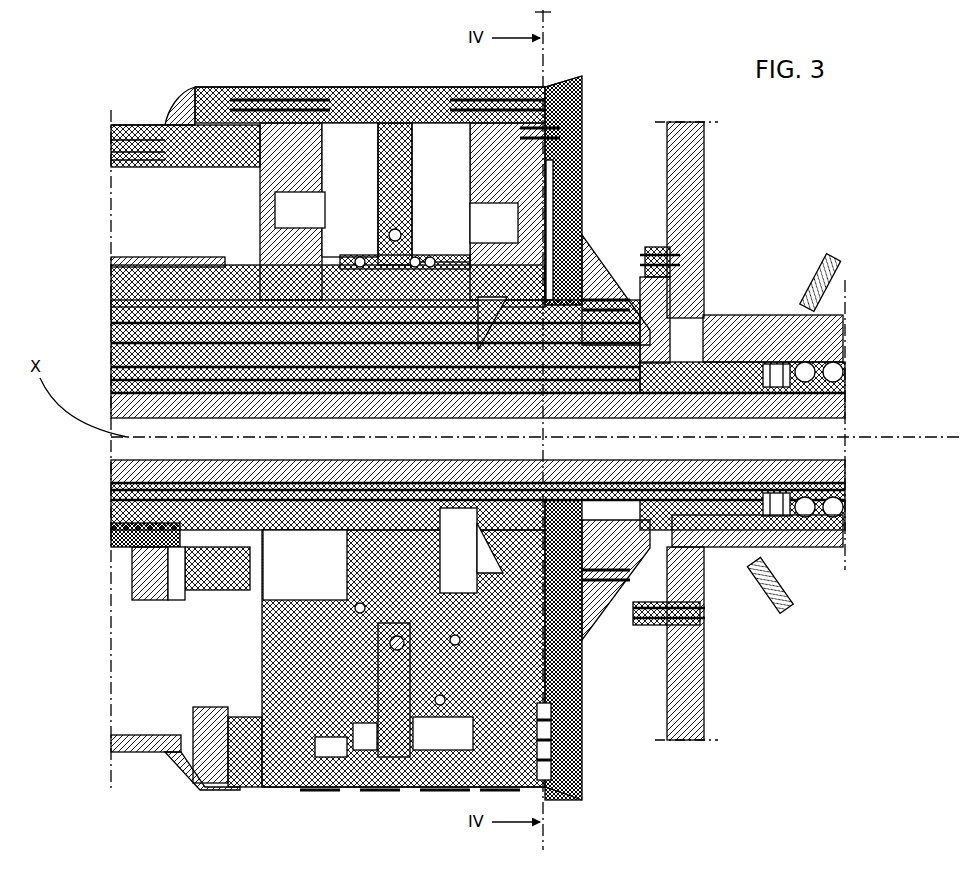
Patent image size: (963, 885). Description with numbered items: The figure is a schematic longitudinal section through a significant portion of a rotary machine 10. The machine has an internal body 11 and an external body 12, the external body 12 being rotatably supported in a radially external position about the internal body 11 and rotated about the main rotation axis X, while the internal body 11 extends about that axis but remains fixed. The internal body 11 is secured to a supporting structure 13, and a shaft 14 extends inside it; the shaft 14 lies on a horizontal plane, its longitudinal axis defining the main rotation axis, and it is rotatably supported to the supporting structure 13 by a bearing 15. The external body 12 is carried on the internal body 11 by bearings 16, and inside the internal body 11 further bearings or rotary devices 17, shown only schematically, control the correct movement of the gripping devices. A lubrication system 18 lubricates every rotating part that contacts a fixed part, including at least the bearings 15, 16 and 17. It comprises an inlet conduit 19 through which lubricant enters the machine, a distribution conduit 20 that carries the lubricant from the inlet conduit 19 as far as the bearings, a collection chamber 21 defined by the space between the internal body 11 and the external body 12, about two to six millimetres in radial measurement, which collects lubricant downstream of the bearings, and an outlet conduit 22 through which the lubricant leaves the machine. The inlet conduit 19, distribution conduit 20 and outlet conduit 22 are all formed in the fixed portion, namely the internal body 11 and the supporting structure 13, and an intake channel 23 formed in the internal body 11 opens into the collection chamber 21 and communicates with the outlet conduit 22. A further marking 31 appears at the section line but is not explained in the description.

The rotary machine 10 is at (125, 90).
The internal body 11 is at (380, 143).
The external body 12 is at (346, 82).
The supporting structure 13 is at (707, 172).
The shaft 14 is at (817, 453).
The bearing 15 is at (818, 350).
The bearings 16 is at (603, 303).
The bearings or rotary devices 17 is at (457, 247).
The lubrication system 18 is at (725, 331).
The inlet conduit 19 is at (642, 365).
The distribution conduit 20 is at (193, 88).
The collection chamber 21 is at (433, 93).
The outlet conduit 22 is at (685, 520).
The intake channel 23 is at (560, 718).
The section line 31 is at (517, 6).